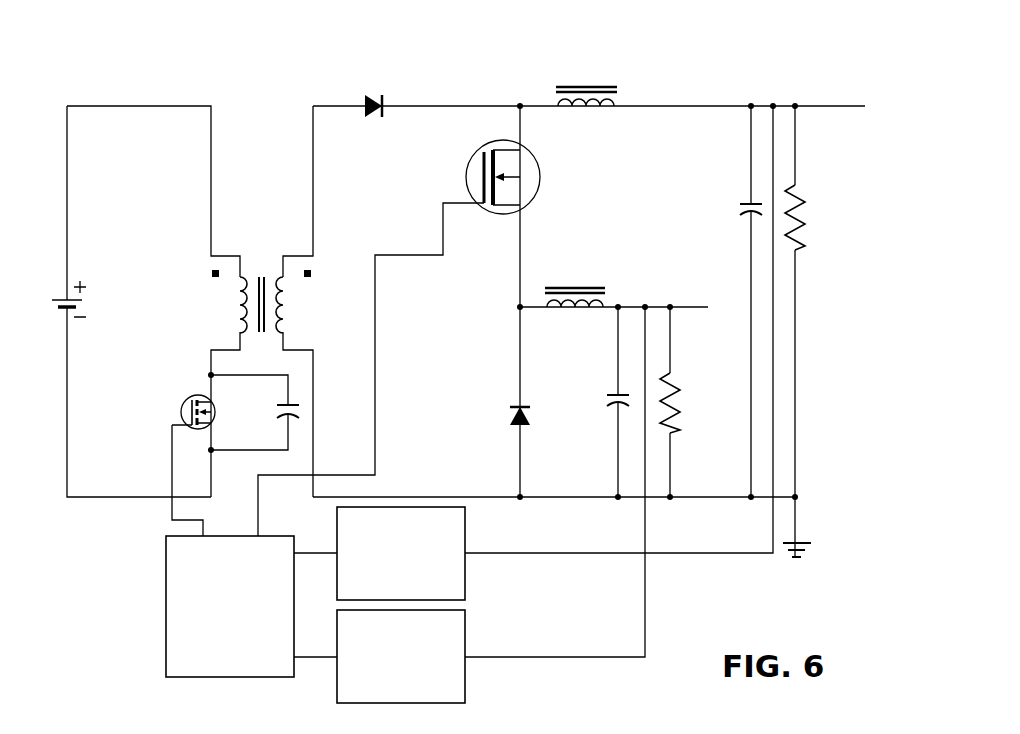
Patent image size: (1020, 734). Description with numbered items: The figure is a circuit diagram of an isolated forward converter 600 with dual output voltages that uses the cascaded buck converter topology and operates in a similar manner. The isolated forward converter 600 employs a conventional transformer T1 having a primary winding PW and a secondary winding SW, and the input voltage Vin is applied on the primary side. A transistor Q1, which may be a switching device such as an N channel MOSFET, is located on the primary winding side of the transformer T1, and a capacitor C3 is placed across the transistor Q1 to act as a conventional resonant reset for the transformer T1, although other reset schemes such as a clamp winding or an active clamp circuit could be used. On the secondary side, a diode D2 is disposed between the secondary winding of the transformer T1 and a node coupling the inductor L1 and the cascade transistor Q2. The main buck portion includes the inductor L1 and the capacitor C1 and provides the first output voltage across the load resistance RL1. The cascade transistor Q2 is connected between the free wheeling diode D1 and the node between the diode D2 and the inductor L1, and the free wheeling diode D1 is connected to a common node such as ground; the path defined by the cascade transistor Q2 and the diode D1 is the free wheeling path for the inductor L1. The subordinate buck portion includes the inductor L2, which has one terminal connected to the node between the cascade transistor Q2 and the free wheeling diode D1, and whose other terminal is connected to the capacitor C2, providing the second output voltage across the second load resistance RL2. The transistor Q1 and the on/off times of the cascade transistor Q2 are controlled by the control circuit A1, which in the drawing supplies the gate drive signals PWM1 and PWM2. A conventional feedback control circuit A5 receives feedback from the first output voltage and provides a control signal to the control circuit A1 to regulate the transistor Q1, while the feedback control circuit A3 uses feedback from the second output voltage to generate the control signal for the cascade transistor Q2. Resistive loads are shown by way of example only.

The isolated forward converter 600 is at (461, 361).
The input voltage Vin is at (88, 299).
The transformer T1 is at (261, 286).
The primary winding PW is at (222, 255).
The secondary winding SW is at (307, 255).
The transistor Q1 is at (211, 417).
The first PWM control signal PWM1 is at (150, 391).
The capacitor C3 is at (255, 412).
The diode D2 is at (375, 91).
The cascade transistor Q2 is at (520, 177).
The second PWM control signal PWM2 is at (400, 240).
The inductor L1 is at (586, 113).
The capacitor C1 is at (732, 207).
The load resistance RL1 is at (816, 217).
The inductor L2 is at (575, 314).
The capacitor C2 is at (601, 400).
The second load resistance RL2 is at (691, 403).
The free wheeling diode D1 is at (501, 414).
The control circuit A1 is at (230, 606).
The feedback control circuit A5 is at (401, 553).
The feedback control circuit A3 is at (401, 656).